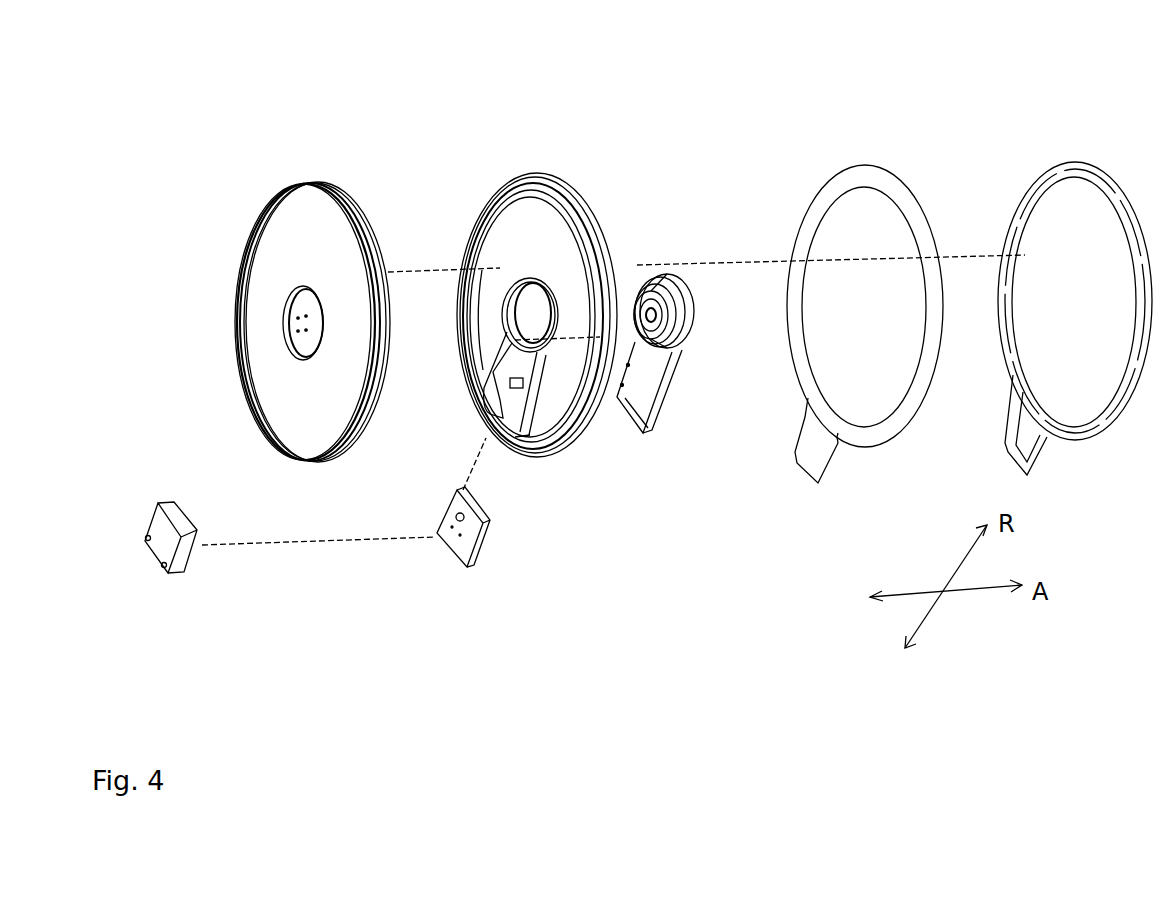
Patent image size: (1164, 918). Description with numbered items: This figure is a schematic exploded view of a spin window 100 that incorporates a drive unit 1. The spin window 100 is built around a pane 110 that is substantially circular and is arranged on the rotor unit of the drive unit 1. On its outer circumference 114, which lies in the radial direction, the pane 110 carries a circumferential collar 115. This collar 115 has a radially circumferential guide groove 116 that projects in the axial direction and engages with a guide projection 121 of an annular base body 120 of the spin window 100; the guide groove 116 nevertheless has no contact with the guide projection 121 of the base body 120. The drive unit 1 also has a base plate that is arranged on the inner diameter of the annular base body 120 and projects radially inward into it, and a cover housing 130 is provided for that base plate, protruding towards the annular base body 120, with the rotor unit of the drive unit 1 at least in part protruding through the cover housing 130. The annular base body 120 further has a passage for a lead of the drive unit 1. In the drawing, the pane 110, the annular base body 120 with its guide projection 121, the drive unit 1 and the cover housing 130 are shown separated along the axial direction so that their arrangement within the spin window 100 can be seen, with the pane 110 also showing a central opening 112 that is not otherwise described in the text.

The spin window 100 is at (955, 145).
The drive unit 1 is at (668, 473).
The pane 110 is at (345, 278).
The central opening 112 is at (297, 343).
The outer circumference 114 is at (330, 177).
The circumferential collar 115 is at (350, 207).
The guide groove 116 is at (370, 241).
The annular base body 120 is at (606, 296).
The guide projection 121 is at (575, 220).
The cover housing 130 is at (511, 380).